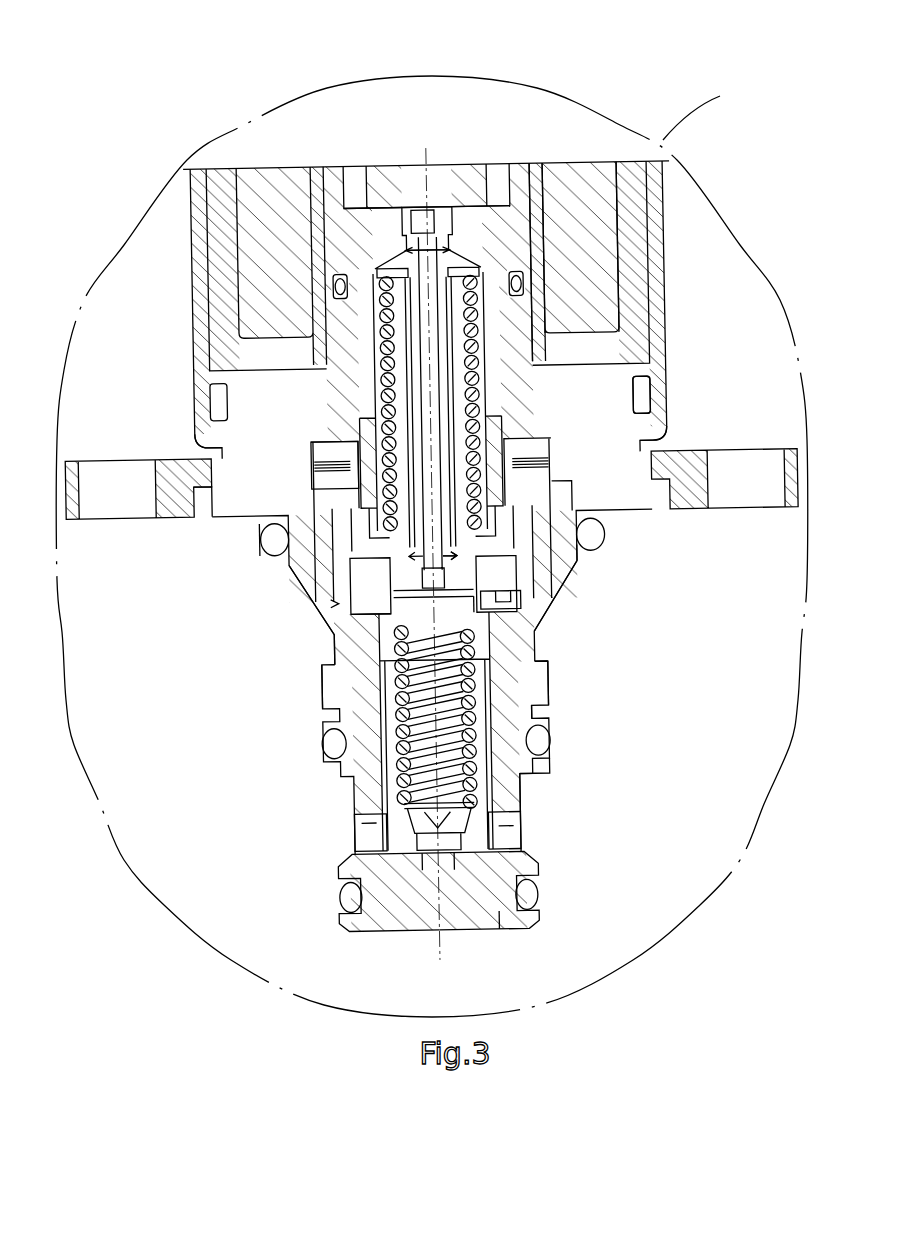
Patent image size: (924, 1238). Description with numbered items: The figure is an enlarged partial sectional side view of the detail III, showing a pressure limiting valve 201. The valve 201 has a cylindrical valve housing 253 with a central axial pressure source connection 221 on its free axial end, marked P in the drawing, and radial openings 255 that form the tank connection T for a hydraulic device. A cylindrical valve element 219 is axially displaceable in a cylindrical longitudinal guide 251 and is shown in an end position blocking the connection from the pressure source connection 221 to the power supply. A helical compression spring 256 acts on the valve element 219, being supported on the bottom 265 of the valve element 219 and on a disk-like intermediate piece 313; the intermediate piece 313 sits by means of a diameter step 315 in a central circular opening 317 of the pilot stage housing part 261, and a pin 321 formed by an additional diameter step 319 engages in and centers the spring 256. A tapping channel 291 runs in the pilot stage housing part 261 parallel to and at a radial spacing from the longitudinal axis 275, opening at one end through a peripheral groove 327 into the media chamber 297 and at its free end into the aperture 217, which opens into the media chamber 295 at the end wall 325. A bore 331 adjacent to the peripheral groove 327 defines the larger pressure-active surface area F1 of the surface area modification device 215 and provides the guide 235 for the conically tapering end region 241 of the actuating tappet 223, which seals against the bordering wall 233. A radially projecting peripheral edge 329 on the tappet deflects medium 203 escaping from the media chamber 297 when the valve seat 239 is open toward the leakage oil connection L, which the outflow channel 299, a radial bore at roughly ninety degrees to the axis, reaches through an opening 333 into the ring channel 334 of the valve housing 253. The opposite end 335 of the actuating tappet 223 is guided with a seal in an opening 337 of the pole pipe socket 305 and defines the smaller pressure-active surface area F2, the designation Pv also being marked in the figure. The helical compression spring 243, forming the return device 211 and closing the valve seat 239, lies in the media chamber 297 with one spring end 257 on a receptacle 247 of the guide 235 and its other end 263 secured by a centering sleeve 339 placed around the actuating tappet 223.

The valve 201 is at (205, 112).
The medium 203 is at (310, 467).
The return device 211 is at (575, 338).
The surface area modification device 215 is at (553, 493).
The aperture 217 is at (600, 603).
The valve element 219 is at (340, 763).
The pressure source connection 221 is at (380, 913).
The actuating tappet 223 is at (530, 290).
The bordering wall 233 is at (200, 434).
The guide 235 is at (485, 222).
The valve seat 239 is at (380, 445).
The end region 241 is at (340, 723).
The helical compression spring 243 is at (652, 400).
The receptacle 247 is at (540, 627).
The longitudinal guide 251 is at (353, 880).
The valve housing 253 is at (540, 792).
The radial openings 255 is at (357, 830).
The helical compression spring 256 is at (553, 743).
The spring end 257 is at (405, 470).
The pilot stage housing part 261 is at (293, 570).
The other end 263 is at (530, 275).
The bottom 265 is at (395, 850).
The longitudinal axis 275 is at (438, 937).
The tapping channel 291 is at (577, 593).
The media chamber 295 is at (540, 762).
The media chamber 297 is at (655, 438).
The outflow channel 299 is at (312, 578).
The pole pipe socket 305 is at (553, 388).
The intermediate piece 313 is at (340, 677).
The diameter step 315 is at (545, 673).
The central circular opening 317 is at (340, 663).
The additional diameter step 319 is at (540, 663).
The pin 321 is at (553, 708).
The end wall 325 is at (340, 643).
The peripheral groove 327 is at (307, 497).
The peripheral edge 329 is at (480, 600).
The bore 331 is at (590, 557).
The opening 333 is at (262, 550).
The ring channel 334 is at (340, 530).
The end 335 is at (452, 207).
The opening 337 is at (408, 228).
The centering sleeve 339 is at (378, 279).
The larger pressure-active surface area F1 is at (337, 602).
The smaller pressure-active surface area F2 is at (453, 243).
The pressure port P is at (493, 918).
The pressure Pv is at (557, 478).
The tank connection T is at (357, 822).
The leakage oil connection L is at (258, 535).
The detail III is at (729, 79).